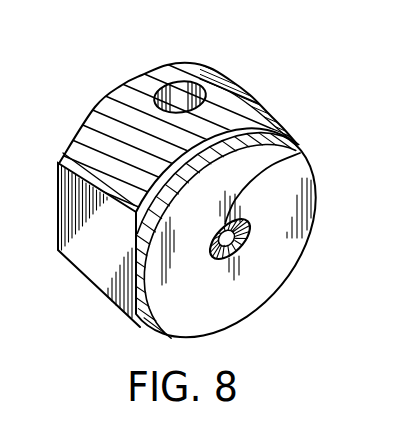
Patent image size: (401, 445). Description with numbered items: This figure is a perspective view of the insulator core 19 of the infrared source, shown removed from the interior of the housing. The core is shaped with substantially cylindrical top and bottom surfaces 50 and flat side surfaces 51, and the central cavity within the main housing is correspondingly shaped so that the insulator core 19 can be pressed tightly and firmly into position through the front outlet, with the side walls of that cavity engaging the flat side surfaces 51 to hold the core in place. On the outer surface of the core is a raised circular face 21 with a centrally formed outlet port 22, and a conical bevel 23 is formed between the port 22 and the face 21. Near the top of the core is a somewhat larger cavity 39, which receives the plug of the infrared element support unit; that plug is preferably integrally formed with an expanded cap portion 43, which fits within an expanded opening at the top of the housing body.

The insulator core 19 is at (122, 100).
The raised circular face 21 is at (223, 307).
The outlet port 22 is at (297, 153).
The conical bevel 23 is at (243, 250).
The cavity 39 is at (183, 88).
The cap portion 43 is at (0, 63).
The top and bottom surfaces 50 is at (232, 101).
The flat side surfaces 51 is at (93, 212).